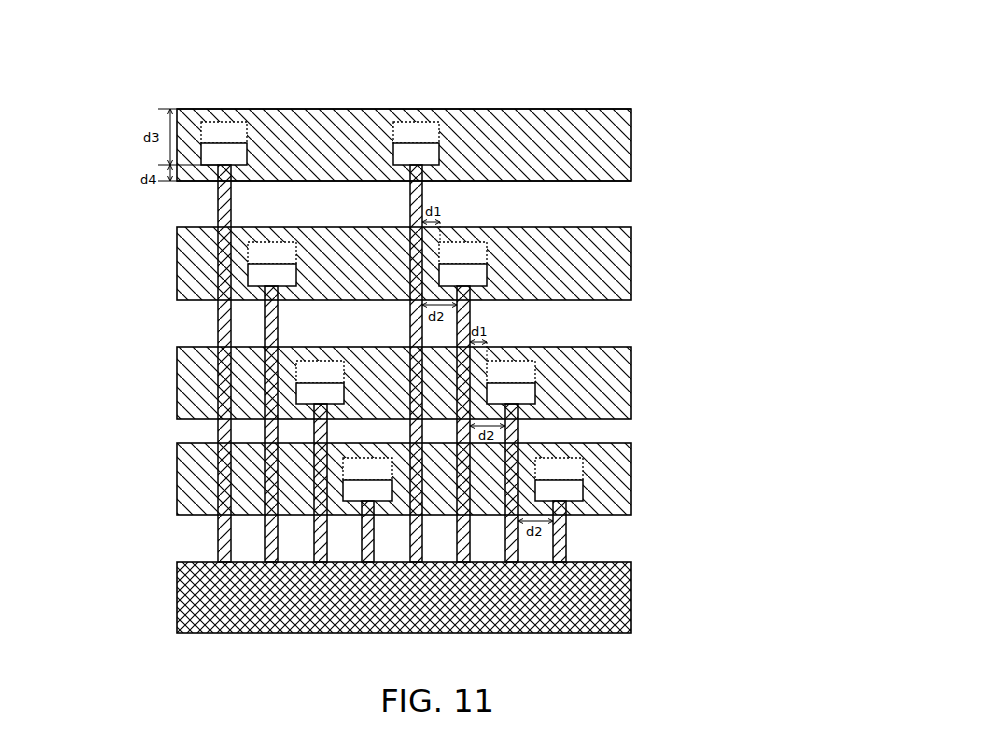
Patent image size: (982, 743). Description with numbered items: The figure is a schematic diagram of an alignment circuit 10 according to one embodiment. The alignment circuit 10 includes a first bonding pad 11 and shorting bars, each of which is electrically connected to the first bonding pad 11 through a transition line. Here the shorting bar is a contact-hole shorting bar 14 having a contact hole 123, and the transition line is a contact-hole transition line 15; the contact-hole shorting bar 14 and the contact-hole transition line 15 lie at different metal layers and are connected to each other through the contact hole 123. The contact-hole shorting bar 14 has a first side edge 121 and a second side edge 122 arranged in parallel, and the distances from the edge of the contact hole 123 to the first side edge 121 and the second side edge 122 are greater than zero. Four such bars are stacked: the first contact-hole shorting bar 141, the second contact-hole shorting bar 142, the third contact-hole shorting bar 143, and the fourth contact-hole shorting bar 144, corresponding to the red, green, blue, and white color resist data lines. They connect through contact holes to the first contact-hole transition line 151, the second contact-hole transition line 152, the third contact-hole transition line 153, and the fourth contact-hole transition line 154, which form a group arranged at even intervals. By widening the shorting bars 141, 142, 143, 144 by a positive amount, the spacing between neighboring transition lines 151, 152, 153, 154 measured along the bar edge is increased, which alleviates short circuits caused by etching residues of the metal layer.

The alignment circuit 10 is at (433, 327).
The first bonding pad 11 is at (603, 572).
The contact-hole shorting bar 14 is at (480, 268).
The first contact-hole shorting bar 141 is at (452, 107).
The second contact-hole shorting bar 142 is at (603, 265).
The third contact-hole shorting bar 143 is at (603, 355).
The fourth contact-hole shorting bar 144 is at (452, 474).
The first side edge 121 is at (345, 108).
The second side edge 122 is at (533, 180).
The contact hole 123 is at (418, 154).
The contact-hole transition line 15 is at (297, 363).
The first contact-hole transition line 151 is at (218, 213).
The second contact-hole transition line 152 is at (265, 322).
The third contact-hole transition line 153 is at (314, 432).
The fourth contact-hole transition line 154 is at (235, 531).